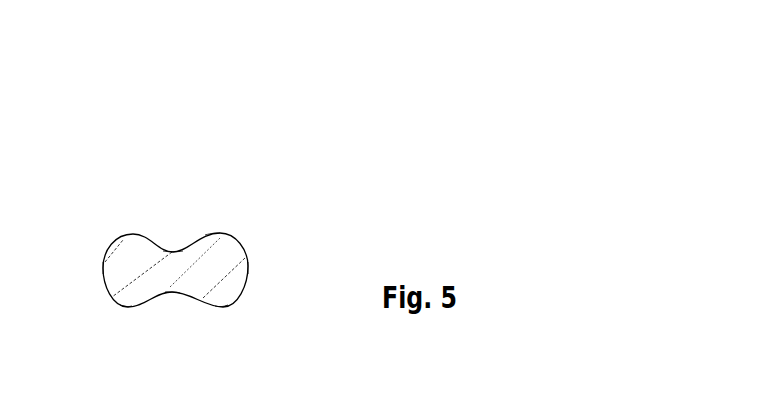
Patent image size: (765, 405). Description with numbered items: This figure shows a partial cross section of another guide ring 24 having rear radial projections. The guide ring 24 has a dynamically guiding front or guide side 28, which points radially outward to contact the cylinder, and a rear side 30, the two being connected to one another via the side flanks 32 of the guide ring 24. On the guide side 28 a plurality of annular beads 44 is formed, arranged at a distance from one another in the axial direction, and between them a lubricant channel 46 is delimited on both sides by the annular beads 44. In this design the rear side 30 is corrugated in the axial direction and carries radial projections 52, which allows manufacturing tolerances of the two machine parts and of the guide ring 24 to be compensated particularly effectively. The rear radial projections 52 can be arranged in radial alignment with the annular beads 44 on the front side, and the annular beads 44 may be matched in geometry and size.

The guide ring 24 is at (310, 187).
The guide side 28 is at (221, 232).
The lubricant channel 46 is at (180, 244).
The rear side 30 is at (161, 295).
The annular beads 44 is at (131, 247).
The side flanks 32 is at (103, 265).
The radial projections 52 is at (128, 300).